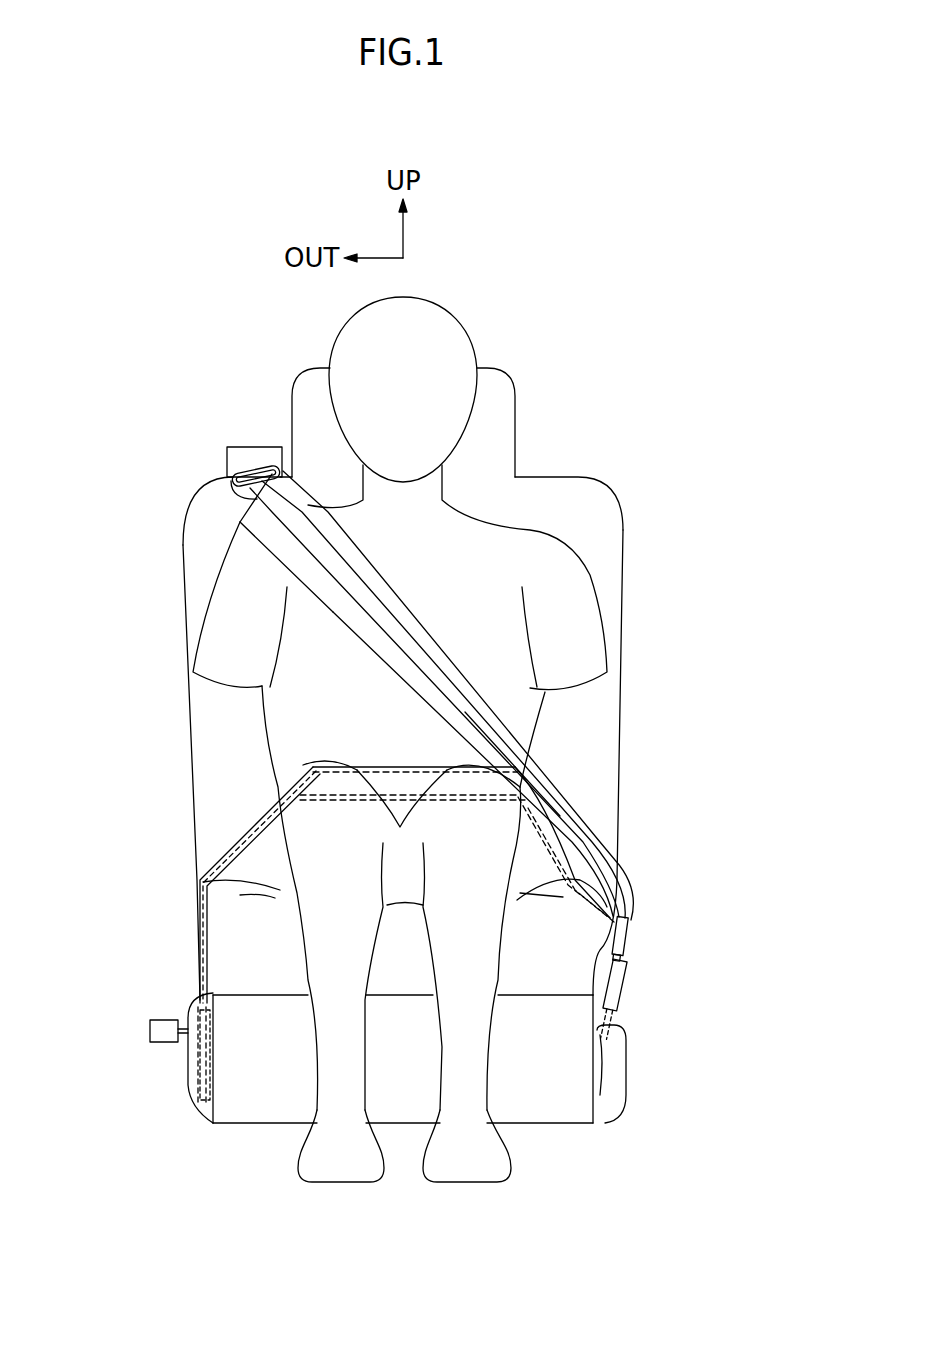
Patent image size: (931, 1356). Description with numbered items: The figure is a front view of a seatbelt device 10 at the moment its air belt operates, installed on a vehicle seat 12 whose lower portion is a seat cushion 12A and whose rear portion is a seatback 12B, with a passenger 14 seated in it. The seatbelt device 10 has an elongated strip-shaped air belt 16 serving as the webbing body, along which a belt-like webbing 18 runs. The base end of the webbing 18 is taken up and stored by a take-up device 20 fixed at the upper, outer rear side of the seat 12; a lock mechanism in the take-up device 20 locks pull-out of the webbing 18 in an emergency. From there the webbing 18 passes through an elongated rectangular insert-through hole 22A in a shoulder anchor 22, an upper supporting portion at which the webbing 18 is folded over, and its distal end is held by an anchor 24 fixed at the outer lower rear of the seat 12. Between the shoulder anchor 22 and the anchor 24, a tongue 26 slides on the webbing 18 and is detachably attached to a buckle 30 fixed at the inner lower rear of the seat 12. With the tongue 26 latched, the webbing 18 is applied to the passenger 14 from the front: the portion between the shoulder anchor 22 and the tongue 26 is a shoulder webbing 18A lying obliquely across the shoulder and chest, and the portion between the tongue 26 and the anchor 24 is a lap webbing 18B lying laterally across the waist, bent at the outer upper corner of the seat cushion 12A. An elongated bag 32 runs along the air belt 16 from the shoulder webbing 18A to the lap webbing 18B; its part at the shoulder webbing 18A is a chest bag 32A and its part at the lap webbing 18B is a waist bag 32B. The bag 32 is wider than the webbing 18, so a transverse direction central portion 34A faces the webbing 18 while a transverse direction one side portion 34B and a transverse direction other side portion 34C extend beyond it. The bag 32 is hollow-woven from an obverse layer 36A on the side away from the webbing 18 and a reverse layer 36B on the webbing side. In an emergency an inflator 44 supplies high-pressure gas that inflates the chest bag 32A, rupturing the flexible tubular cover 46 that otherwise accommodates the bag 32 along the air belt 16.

The seatbelt device 10 is at (224, 527).
The seat 12 is at (612, 500).
The seat cushion 12A is at (224, 933).
The seatback 12B is at (197, 733).
The passenger 14 is at (597, 587).
The air belt 16 is at (427, 600).
The webbing 18 is at (231, 483).
The shoulder webbing 18A is at (410, 638).
The lap webbing 18B is at (383, 763).
The take-up device 20 is at (257, 447).
The shoulder anchor 22 is at (243, 470).
The insert-through hole 22A is at (237, 478).
The anchor 24 is at (189, 1073).
The tongue 26 is at (630, 934).
The buckle 30 is at (623, 983).
The bag 32 is at (378, 656).
The chest bag 32A is at (455, 680).
The waist bag 32B is at (243, 840).
The transverse direction central portion 34A is at (428, 663).
The transverse direction one side portion 34B is at (386, 588).
The transverse direction other side portion 34C is at (347, 610).
The obverse layer 36A is at (340, 541).
The reverse layer 36B is at (290, 568).
The inflator 44 is at (150, 1031).
The cover 46 is at (417, 764).